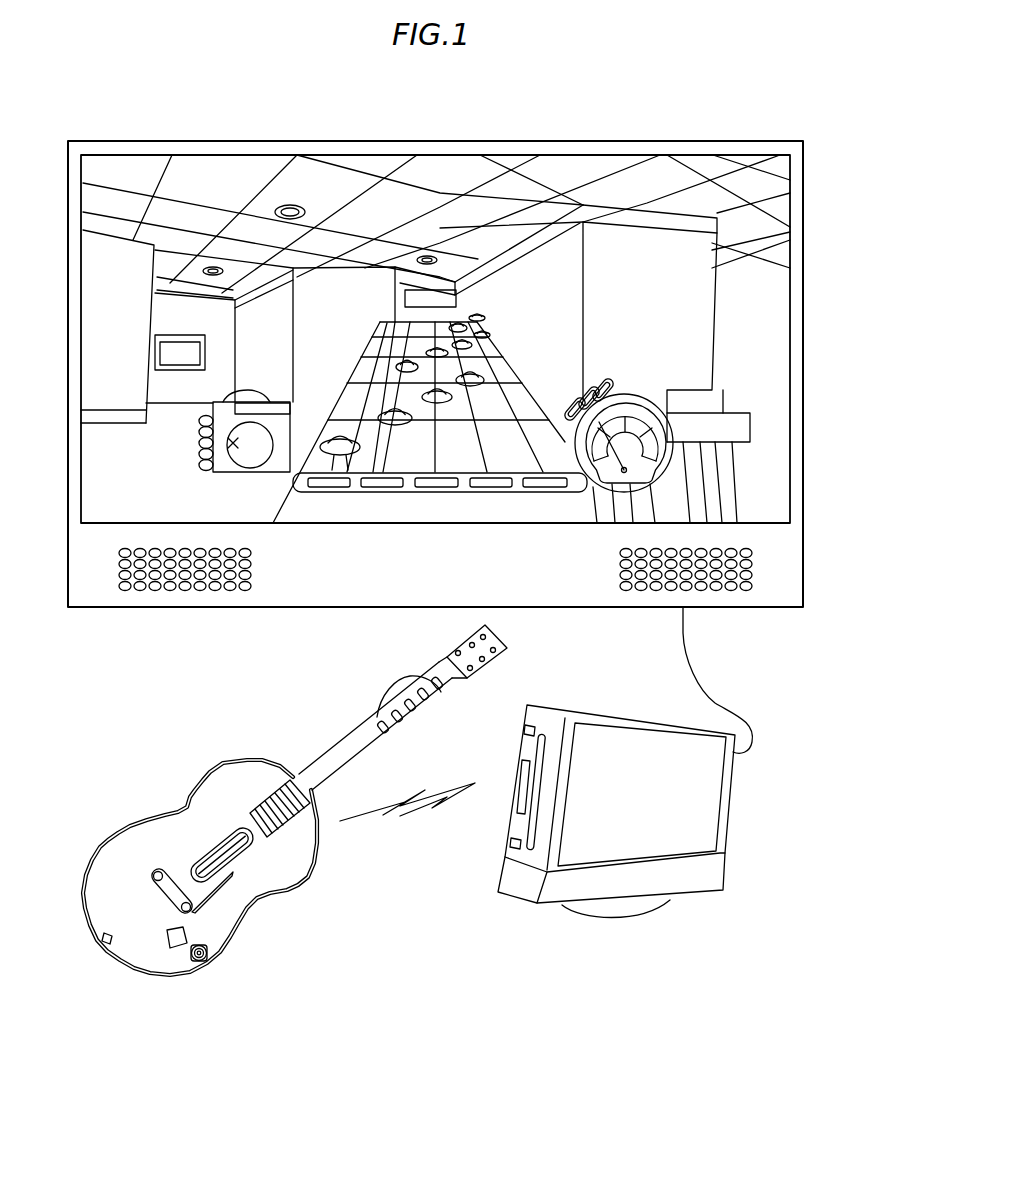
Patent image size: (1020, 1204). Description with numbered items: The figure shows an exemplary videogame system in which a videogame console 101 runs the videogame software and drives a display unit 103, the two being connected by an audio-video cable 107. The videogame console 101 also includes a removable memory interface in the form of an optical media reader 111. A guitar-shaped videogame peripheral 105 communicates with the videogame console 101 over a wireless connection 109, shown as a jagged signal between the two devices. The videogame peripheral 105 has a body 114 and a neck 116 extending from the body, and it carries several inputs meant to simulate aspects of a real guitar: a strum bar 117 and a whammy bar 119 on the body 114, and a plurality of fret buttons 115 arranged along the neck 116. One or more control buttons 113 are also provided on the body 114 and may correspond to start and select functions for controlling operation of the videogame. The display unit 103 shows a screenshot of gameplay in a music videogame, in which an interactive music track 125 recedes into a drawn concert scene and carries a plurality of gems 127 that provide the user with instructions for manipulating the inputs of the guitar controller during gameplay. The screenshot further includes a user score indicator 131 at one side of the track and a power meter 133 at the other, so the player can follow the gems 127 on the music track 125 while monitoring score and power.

The videogame console 101 is at (616, 824).
The display unit 103 is at (435, 398).
The videogame peripheral 105 is at (295, 841).
The audio-video cable 107 is at (695, 678).
The wireless connection 109 is at (405, 817).
The optical media reader 111 is at (543, 785).
The control buttons 113 is at (192, 950).
The body 114 is at (221, 776).
The fret buttons 115 is at (383, 690).
The neck 116 is at (357, 730).
The strum bar 117 is at (213, 845).
The whammy bar 119 is at (200, 913).
The interactive music track 125 is at (348, 380).
The gems 127 is at (393, 416).
The user score indicator 131 is at (248, 402).
The power meter 133 is at (628, 402).